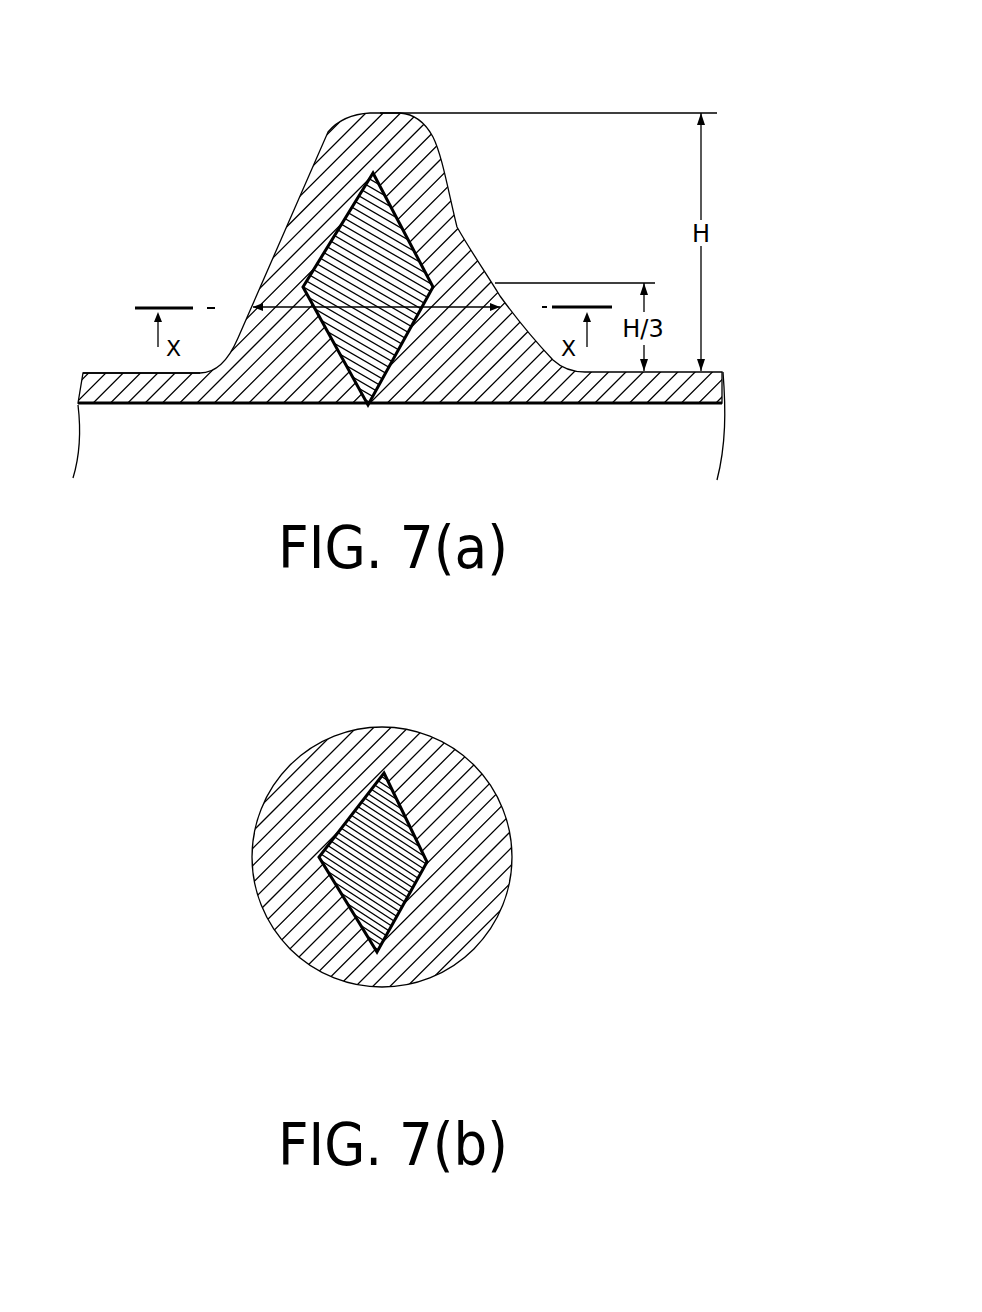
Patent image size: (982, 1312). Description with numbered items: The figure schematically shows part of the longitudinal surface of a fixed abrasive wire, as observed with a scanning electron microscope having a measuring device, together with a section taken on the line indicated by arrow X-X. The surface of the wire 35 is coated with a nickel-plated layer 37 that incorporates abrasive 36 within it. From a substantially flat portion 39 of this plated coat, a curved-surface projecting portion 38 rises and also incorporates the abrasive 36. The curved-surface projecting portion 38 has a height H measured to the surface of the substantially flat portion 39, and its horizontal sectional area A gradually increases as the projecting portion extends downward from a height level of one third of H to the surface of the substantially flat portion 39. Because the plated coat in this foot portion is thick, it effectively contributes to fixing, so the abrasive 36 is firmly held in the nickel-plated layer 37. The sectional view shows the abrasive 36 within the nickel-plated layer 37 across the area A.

In FIG. 7A, the wire 35 is at (705, 450).
In FIG. 7A, the abrasive 36 is at (340, 223).
In FIG. 7B, the abrasive 36 is at (340, 892).
In FIG. 7A, the nickel-plated layer 37 is at (707, 388).
In FIG. 7B, the nickel-plated layer 37 is at (507, 890).
In FIG. 7A, the curved-surface projecting portion 38 is at (333, 128).
In FIG. 7A, the substantially flat portion 39 is at (113, 373).
In FIG. 7A, the horizontal sectional area A is at (450, 303).
In FIG. 7B, the horizontal sectional area A is at (495, 795).